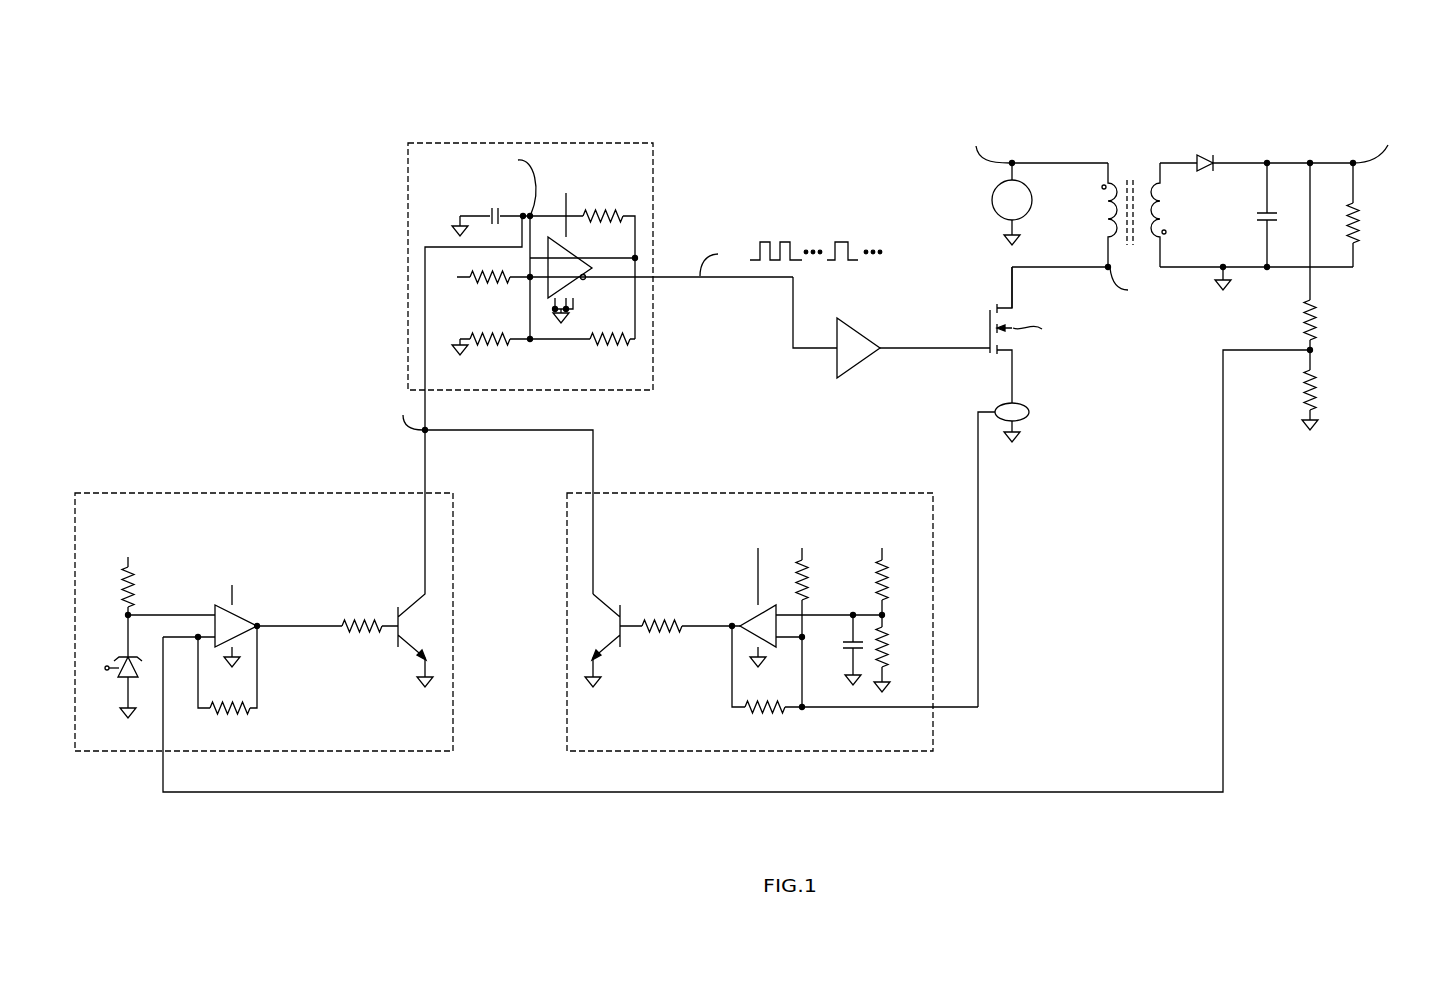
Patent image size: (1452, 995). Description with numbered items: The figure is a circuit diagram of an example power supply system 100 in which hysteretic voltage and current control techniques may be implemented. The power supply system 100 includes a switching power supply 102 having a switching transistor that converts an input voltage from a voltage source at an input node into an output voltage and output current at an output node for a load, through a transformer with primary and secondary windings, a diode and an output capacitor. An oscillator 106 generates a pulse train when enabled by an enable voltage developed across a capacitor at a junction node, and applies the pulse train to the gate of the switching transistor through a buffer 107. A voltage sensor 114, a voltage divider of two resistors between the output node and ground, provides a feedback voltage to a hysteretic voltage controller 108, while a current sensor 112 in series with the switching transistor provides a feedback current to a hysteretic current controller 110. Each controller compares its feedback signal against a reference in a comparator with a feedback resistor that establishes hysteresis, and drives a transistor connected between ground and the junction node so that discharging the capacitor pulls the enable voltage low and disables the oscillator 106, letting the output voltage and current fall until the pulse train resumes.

The power supply system 100 is at (287, 77).
The switching power supply 102 is at (1146, 131).
The oscillator 106 is at (437, 167).
The buffer 107 is at (856, 331).
The hysteretic voltage controller 108 is at (350, 538).
The hysteretic current controller 110 is at (650, 530).
The current sensor 112 is at (1029, 412).
The voltage sensor 114 is at (1365, 350).